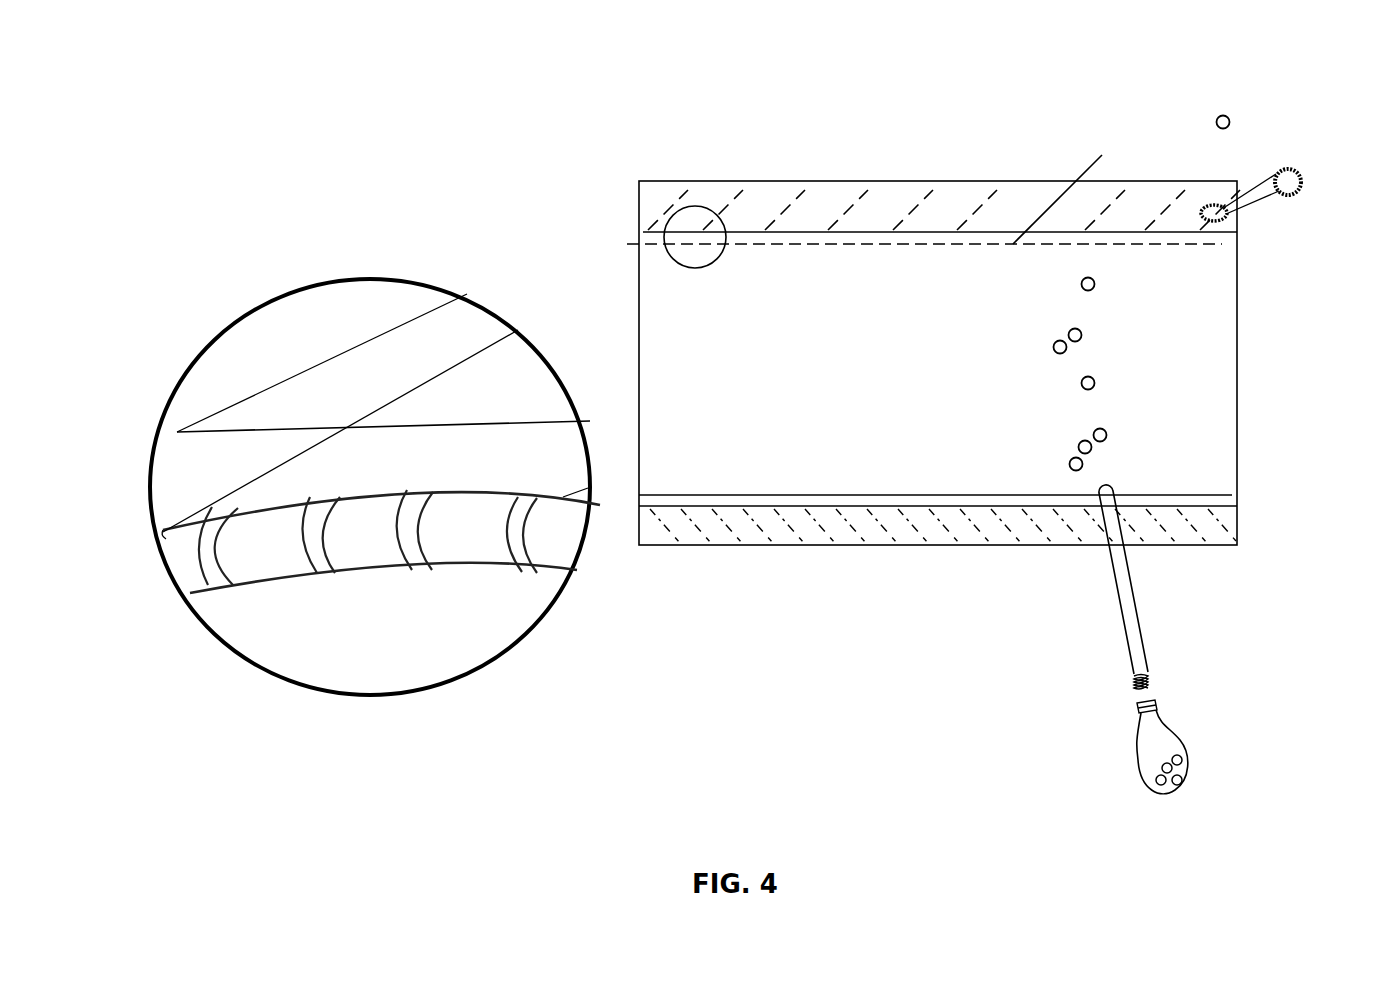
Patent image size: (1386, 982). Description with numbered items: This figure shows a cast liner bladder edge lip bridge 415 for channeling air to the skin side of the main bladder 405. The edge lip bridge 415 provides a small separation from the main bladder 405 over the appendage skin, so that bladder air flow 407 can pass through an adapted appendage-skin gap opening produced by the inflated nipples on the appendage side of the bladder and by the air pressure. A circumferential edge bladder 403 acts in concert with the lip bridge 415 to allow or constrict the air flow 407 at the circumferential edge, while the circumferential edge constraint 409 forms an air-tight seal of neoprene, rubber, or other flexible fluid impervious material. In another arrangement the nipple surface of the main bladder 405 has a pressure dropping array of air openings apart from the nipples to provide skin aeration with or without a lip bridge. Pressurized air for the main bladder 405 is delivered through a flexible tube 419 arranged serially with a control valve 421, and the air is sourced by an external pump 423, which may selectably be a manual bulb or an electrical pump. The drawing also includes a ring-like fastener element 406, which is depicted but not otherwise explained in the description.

The circumferential edge bladder 403 is at (828, 182).
The main bladder 405 is at (366, 360).
The grommet ring 406 is at (1301, 159).
The bladder air flow 407 is at (756, 220).
The circumferential edge constraint 409 is at (960, 530).
The edge lip bridge 415 is at (685, 258).
The flexible tube 419 is at (1153, 666).
The control valve 421 is at (1176, 699).
The external pump 423 is at (1209, 779).